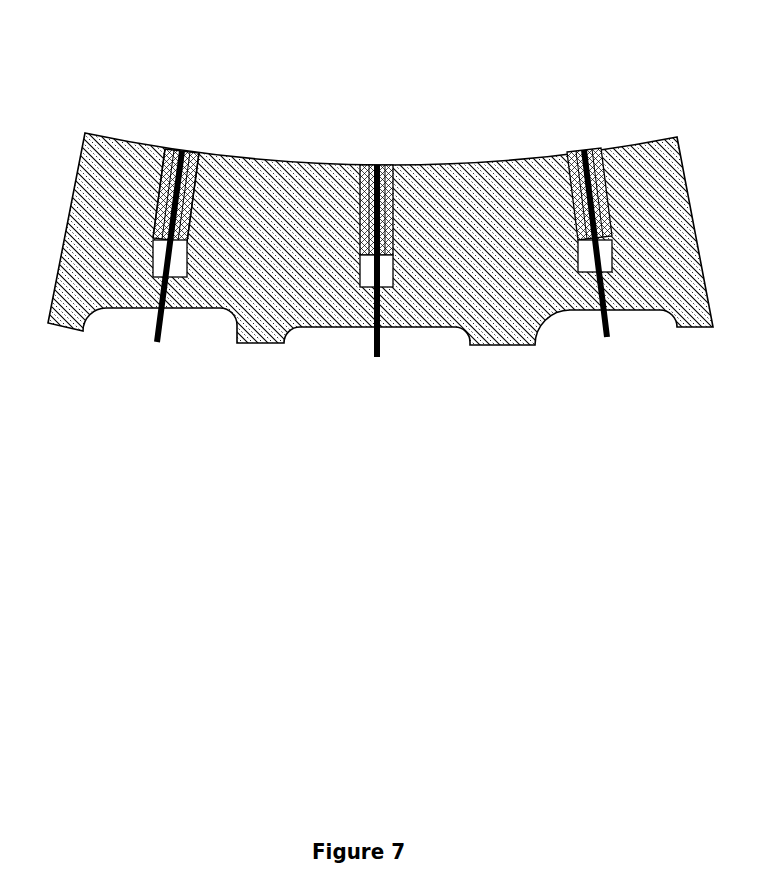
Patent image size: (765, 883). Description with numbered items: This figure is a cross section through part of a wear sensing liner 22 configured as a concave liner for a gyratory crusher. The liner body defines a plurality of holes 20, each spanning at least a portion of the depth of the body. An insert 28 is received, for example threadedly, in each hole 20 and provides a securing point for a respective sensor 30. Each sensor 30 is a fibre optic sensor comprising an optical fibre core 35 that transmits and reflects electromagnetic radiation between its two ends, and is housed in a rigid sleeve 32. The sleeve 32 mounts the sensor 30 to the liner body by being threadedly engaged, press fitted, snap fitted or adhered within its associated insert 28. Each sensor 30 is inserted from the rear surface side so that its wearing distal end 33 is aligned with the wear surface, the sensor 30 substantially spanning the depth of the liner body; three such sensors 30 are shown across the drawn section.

The hole 20 is at (157, 258).
The wear sensing liner 22 is at (132, 106).
The insert 28 is at (163, 166).
The sensor 30 is at (193, 146).
The rigid sleeve 32 is at (155, 207).
The distal end 33 is at (182, 150).
The optical fibre core 35 is at (218, 162).